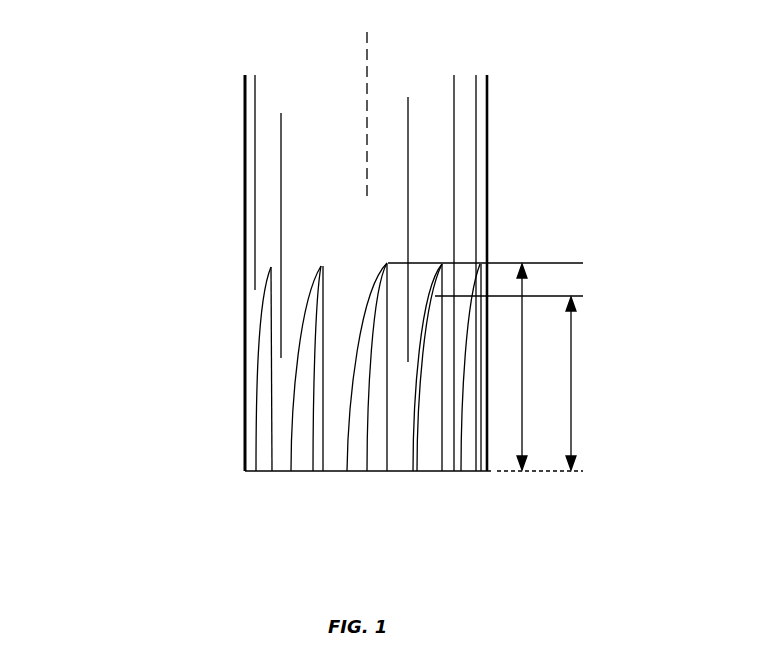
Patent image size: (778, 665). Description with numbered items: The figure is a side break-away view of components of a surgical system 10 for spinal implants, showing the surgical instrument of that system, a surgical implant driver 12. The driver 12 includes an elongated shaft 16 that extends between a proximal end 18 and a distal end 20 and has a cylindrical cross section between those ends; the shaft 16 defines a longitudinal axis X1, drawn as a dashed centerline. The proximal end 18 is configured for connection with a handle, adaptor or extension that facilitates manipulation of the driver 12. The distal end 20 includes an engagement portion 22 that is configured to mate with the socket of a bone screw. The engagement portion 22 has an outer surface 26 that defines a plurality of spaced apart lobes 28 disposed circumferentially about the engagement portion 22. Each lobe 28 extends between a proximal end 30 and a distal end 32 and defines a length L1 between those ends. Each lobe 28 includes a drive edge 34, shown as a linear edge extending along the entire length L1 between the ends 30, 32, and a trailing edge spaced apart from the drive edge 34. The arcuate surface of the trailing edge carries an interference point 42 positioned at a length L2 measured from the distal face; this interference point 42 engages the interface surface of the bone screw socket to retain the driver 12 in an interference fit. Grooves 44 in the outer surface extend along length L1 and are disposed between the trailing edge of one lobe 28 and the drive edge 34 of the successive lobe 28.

The surgical system 10 is at (634, 116).
The surgical implant driver 12 is at (166, 139).
The elongated shaft 16 is at (242, 103).
The proximal end 18 is at (445, 108).
The distal end 20 is at (262, 473).
The engagement portion 22 is at (166, 399).
The outer surface 26 is at (263, 362).
The lobe 28 is at (396, 455).
The proximal end 30 is at (382, 262).
The distal end 32 is at (391, 472).
The drive edge 34 is at (380, 433).
The interference point 42 is at (418, 320).
The groove 44 is at (428, 458).
The longitudinal axis X1 is at (368, 104).
The lobe length L1 is at (522, 367).
The interference point length L2 is at (509, 383).